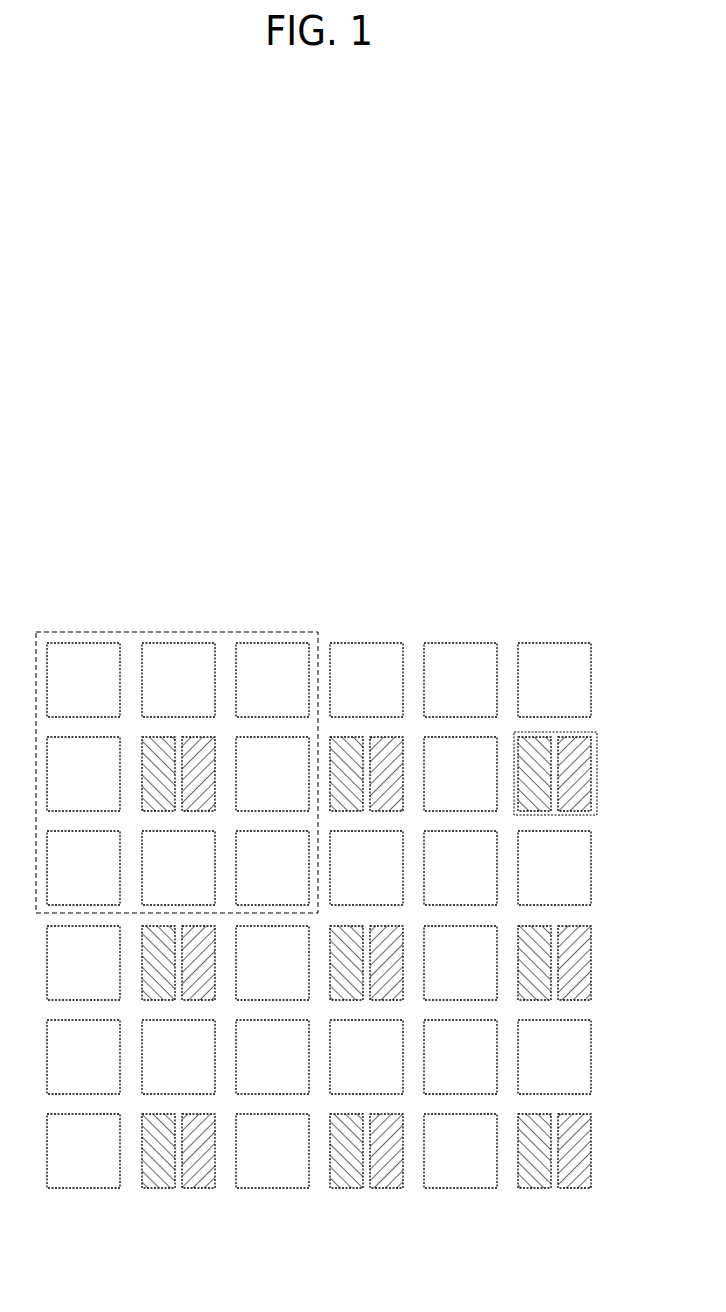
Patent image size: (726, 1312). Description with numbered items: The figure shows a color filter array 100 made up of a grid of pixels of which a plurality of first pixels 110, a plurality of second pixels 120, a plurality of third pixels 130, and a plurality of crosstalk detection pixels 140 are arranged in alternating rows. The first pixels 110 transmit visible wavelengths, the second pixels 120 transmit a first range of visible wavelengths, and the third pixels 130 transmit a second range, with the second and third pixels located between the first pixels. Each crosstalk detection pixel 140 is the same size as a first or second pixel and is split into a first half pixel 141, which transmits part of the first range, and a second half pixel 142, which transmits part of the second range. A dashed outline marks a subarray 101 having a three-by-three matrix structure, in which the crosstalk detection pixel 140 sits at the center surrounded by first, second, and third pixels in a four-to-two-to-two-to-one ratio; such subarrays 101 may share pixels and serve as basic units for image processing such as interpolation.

The color filter array 100 is at (497, 622).
The subarray 101 is at (283, 632).
The first pixel 110 is at (66, 694).
The second pixel 120 is at (66, 788).
The third pixel 130 is at (161, 694).
The crosstalk detection pixel 140 is at (597, 800).
The first half pixel 141 is at (597, 750).
The second half pixel 142 is at (580, 770).